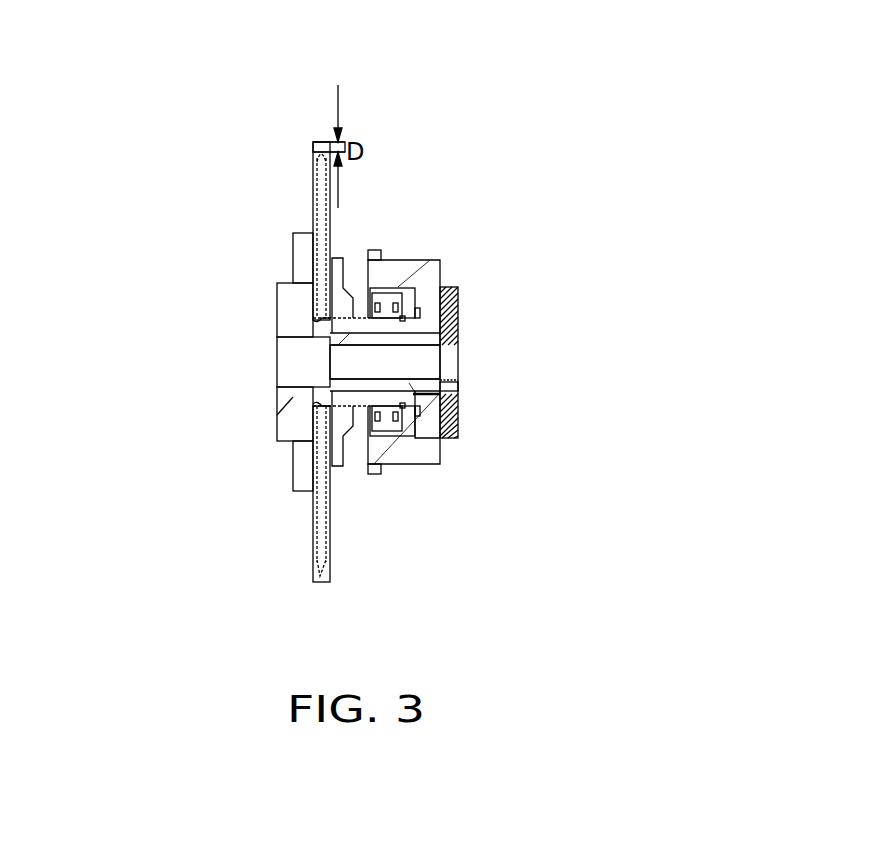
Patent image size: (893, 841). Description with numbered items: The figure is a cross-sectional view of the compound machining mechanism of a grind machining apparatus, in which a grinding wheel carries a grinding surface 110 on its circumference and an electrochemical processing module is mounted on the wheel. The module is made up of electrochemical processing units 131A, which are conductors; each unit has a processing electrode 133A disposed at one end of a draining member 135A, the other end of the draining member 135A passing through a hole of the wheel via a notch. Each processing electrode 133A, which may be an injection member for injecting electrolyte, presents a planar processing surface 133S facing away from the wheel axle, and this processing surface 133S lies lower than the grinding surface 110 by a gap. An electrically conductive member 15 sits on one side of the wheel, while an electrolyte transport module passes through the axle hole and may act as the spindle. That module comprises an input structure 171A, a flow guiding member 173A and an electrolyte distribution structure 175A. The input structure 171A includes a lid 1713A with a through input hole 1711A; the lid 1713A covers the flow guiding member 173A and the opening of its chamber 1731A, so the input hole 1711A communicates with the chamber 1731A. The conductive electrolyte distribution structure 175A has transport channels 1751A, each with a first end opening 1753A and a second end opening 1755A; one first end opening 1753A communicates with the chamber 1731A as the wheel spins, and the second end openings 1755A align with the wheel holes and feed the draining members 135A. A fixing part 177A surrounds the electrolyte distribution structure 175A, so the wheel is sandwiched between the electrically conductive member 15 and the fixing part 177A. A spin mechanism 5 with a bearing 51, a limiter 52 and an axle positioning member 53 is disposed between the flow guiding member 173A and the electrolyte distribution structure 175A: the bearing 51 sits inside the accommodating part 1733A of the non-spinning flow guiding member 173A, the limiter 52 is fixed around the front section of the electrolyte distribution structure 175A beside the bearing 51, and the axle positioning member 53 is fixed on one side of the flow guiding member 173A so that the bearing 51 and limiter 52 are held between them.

The grinding surface 110 is at (312, 123).
The processing surface 133S is at (318, 142).
The electrochemical processing unit 131A is at (207, 358).
The processing electrode 133A is at (317, 168).
The draining member 135A is at (318, 225).
The electrically conductive member 15 is at (302, 465).
The electrolyte distribution structure 175A is at (258, 290).
The transport channel 1751A is at (294, 331).
The second end opening 1755A is at (308, 281).
The flow guiding member 173A is at (450, 248).
The fixing part 177A is at (338, 455).
The first end opening 1753A is at (412, 328).
The input structure 171A is at (530, 386).
The lid 1713A is at (458, 332).
The input hole 1711A is at (458, 387).
The chamber 1731A is at (453, 415).
The accommodating part 1733A is at (407, 427).
The spin mechanism 5 is at (401, 295).
The axle positioning member 53 is at (368, 252).
The bearing 51 is at (388, 300).
The limiter 52 is at (402, 318).